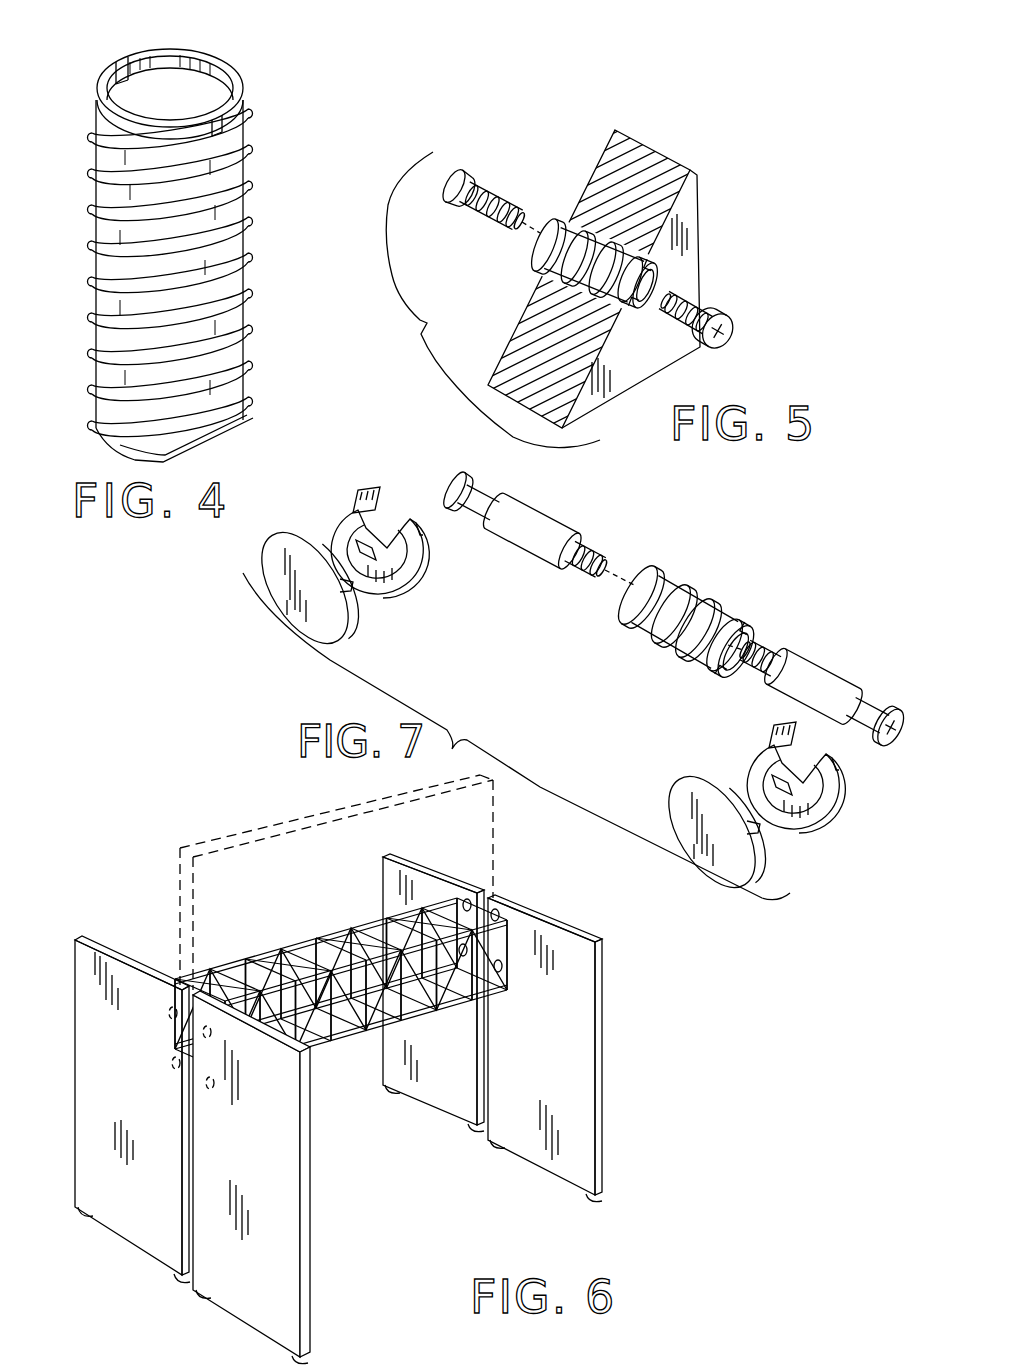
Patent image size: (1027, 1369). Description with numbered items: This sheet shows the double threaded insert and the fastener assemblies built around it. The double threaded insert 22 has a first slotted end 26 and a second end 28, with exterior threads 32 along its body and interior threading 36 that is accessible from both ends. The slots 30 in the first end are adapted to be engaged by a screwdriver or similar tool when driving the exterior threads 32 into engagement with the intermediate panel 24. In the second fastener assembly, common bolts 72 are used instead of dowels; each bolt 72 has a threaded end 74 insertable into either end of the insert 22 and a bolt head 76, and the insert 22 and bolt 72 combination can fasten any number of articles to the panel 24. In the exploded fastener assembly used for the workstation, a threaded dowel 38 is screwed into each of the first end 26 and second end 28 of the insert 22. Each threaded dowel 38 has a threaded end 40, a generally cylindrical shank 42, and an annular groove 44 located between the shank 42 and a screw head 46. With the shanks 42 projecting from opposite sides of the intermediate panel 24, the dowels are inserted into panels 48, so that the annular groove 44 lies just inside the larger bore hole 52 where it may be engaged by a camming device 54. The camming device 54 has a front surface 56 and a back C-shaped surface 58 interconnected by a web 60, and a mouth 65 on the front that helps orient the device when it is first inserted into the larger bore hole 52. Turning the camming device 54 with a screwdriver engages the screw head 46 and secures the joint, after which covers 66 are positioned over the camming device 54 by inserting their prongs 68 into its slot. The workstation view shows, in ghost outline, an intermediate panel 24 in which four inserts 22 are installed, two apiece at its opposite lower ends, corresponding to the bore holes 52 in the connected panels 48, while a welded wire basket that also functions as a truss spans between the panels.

In FIG. 4, the double threaded insert 22 is at (92, 68).
In FIG. 5, the double threaded insert 22 is at (607, 255).
In FIG. 7, the double threaded insert 22 is at (682, 608).
In FIG. 5, the intermediate panel 24 is at (640, 155).
In FIG. 6, the intermediate panel 24 is at (255, 830).
In FIG. 4, the first slotted end 26 is at (192, 48).
In FIG. 5, the first slotted end 26 is at (653, 273).
In FIG. 7, the first slotted end 26 is at (730, 620).
In FIG. 4, the second end 28 is at (120, 447).
In FIG. 5, the second end 28 is at (543, 222).
In FIG. 7, the second end 28 is at (633, 570).
In FIG. 4, the slots 30 is at (120, 63).
In FIG. 5, the slots 30 is at (647, 295).
In FIG. 7, the slots 30 is at (728, 642).
In FIG. 4, the exterior threads 32 is at (243, 197).
In FIG. 5, the exterior threads 32 is at (540, 286).
In FIG. 7, the exterior threads 32 is at (632, 625).
In FIG. 4, the interior threading 36 is at (207, 78).
In FIG. 7, the threaded dowel 38 is at (674, 594).
In FIG. 7, the threaded end 40 is at (570, 568).
In FIG. 7, the cylindrical shank 42 is at (512, 542).
In FIG. 7, the annular groove 44 is at (490, 498).
In FIG. 7, the screw head 46 is at (455, 480).
In FIG. 6, the panels 48 is at (103, 968).
In FIG. 6, the larger bore hole 52 is at (169, 1018).
In FIG. 7, the camming device 54 is at (589, 644).
In FIG. 7, the front surface 56 is at (333, 522).
In FIG. 7, the back C-shaped surface 58 is at (422, 530).
In FIG. 7, the web 60 is at (420, 566).
In FIG. 7, the mouth 65 is at (366, 503).
In FIG. 7, the covers 66 is at (525, 709).
In FIG. 7, the prongs 68 is at (347, 583).
In FIG. 5, the bolts 72 is at (594, 257).
In FIG. 5, the threaded end 74 is at (480, 225).
In FIG. 5, the bolt head 76 is at (442, 197).